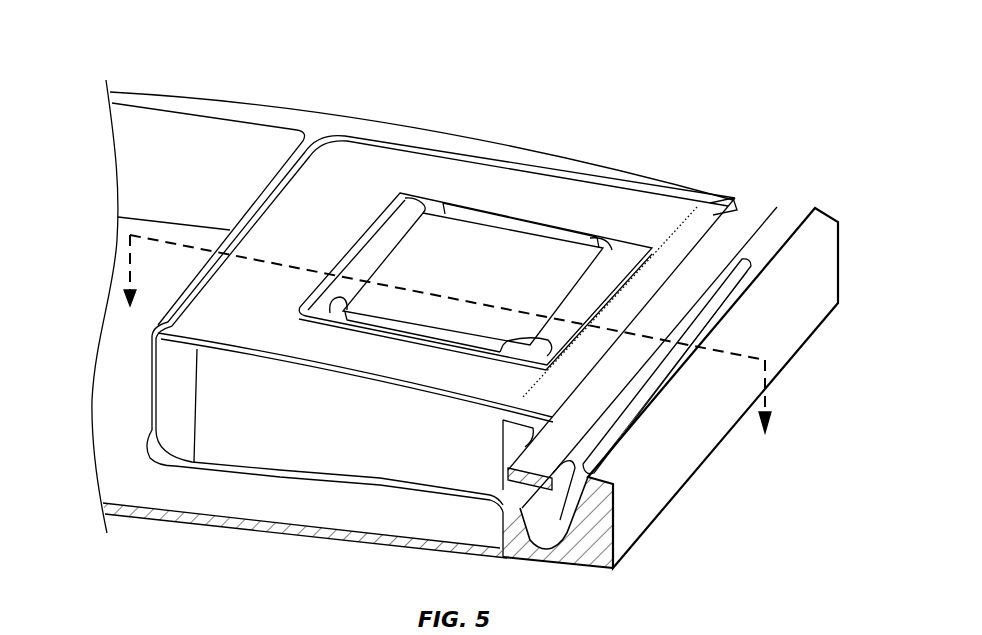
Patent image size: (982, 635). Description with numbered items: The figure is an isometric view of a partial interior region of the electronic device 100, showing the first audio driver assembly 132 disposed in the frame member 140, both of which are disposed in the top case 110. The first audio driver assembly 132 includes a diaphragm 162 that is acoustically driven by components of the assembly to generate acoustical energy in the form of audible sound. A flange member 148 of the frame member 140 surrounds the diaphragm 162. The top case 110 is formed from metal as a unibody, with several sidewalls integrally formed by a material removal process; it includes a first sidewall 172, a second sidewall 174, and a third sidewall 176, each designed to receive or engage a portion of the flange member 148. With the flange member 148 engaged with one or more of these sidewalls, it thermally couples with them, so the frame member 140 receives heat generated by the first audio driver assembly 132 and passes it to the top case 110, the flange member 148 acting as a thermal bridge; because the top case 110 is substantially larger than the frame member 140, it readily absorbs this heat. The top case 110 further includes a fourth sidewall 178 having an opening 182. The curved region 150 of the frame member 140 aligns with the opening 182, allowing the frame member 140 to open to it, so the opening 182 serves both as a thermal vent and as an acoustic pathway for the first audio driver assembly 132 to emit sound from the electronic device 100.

The electronic device 100 is at (770, 107).
The top case 110 is at (123, 486).
The first audio driver assembly 132 is at (542, 208).
The frame member 140 is at (323, 135).
The flange member 148 is at (320, 214).
The curved region 150 is at (659, 214).
The diaphragm 162 is at (454, 282).
The first sidewall 172 is at (307, 442).
The second sidewall 174 is at (250, 202).
The third sidewall 176 is at (463, 145).
The fourth sidewall 178 is at (747, 217).
The opening 182 is at (757, 273).